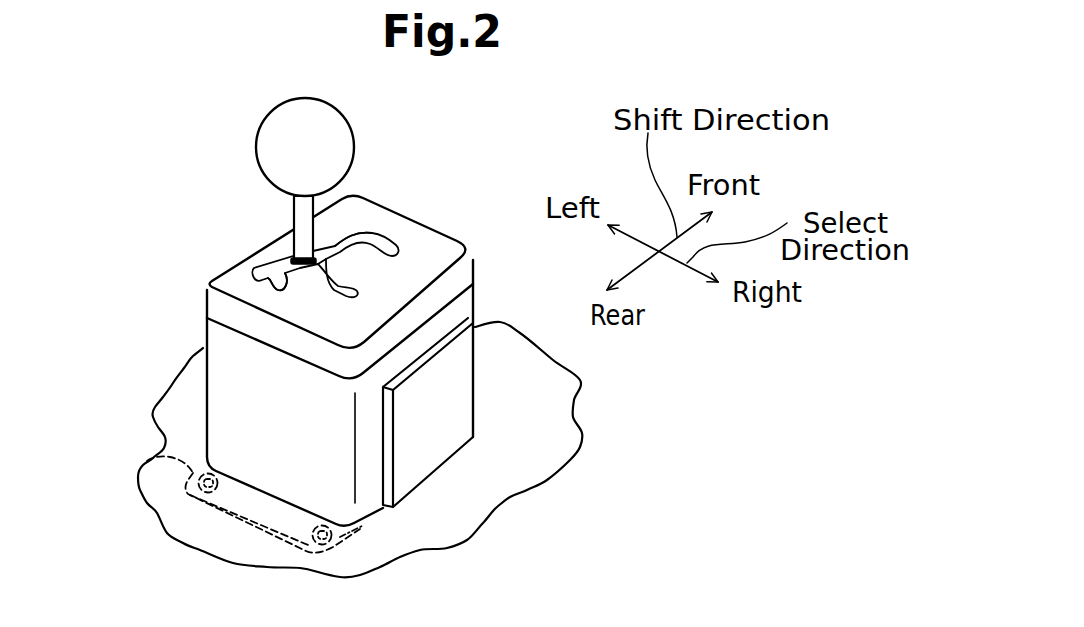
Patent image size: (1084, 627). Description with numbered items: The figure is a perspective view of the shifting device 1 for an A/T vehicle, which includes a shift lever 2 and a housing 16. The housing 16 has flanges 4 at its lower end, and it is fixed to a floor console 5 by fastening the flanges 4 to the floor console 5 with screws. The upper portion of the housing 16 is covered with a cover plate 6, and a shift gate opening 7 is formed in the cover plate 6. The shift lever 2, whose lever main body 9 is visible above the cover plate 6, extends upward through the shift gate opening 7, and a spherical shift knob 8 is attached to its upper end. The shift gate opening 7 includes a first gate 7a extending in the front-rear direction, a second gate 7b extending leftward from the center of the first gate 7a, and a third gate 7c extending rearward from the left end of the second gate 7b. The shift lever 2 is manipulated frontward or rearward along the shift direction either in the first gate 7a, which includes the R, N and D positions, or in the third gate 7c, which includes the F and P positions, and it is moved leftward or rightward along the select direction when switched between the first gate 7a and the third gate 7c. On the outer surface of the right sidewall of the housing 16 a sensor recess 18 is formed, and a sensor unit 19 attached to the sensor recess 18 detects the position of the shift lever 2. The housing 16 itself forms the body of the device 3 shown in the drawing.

The shifting device 1 is at (538, 178).
The shift lever 2 is at (349, 116).
The housing 3 is at (204, 300).
The flanges 4 is at (147, 461).
The floor console 5 is at (573, 444).
The cover plate 6 is at (228, 270).
The shift gate opening 7 is at (390, 238).
The first gate 7a is at (338, 300).
The second gate 7b is at (328, 245).
The third gate 7c is at (272, 282).
The shift knob 8 is at (268, 122).
The lever main body 9 is at (313, 214).
The housing 16 is at (208, 369).
The sensor recess 18 is at (397, 438).
The sensor unit 19 is at (463, 355).